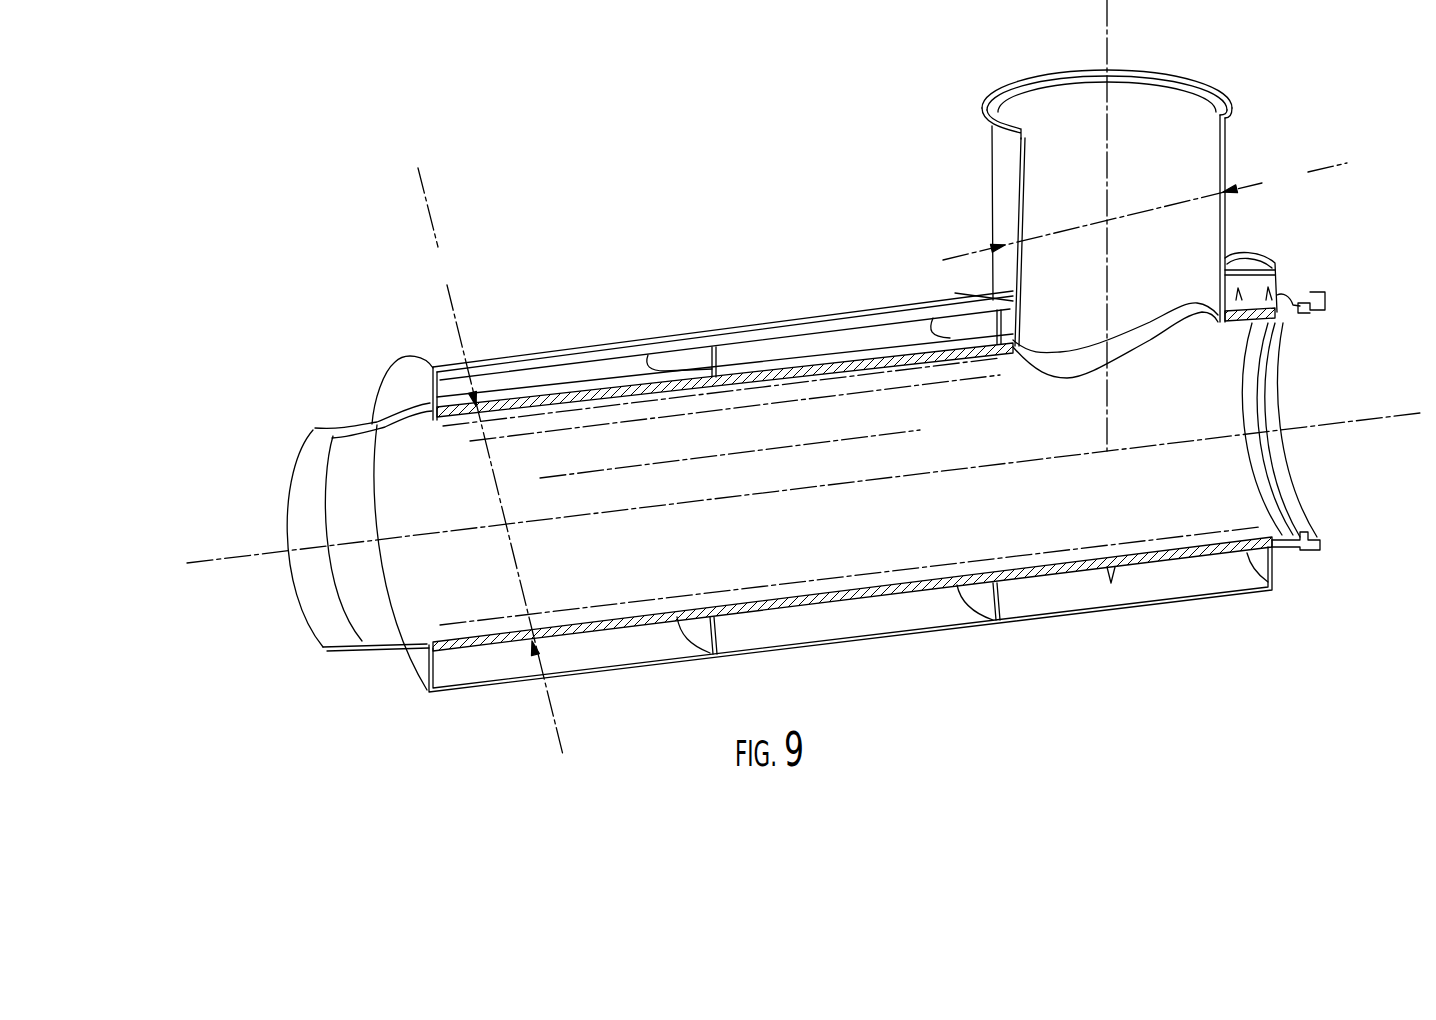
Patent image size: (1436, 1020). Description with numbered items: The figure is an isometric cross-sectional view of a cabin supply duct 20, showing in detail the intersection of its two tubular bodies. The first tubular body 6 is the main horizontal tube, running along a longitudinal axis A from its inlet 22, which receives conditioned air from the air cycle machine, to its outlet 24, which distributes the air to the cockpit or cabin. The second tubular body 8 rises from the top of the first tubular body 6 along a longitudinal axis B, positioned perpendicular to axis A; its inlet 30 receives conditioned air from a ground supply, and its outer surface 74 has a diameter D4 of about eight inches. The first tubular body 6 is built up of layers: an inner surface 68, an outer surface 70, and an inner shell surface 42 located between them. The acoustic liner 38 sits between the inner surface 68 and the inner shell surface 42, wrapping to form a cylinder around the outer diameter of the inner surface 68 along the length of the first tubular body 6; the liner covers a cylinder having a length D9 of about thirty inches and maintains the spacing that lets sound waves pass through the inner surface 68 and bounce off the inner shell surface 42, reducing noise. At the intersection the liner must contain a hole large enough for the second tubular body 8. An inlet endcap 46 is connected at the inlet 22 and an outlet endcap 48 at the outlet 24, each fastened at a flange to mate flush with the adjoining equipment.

The cabin supply duct 20 is at (240, 155).
The inlet 22 is at (1227, 490).
The outlet 24 is at (323, 508).
The outlet endcap 48 is at (370, 365).
The inner shell surface 42 is at (560, 392).
The acoustic liner 38 is at (820, 365).
The second tubular body 8 is at (1106, 177).
The outer surface 74 is at (1003, 163).
The inlet 30 is at (1043, 107).
The inner surface 68 is at (1207, 383).
The inlet endcap 46 is at (1312, 565).
The first tubular body 6 is at (898, 648).
The outer surface 70 is at (1027, 617).
The longitudinal axis A is at (1392, 411).
The longitudinal axis B is at (1108, 37).
The diameter D4 is at (1145, 211).
The length D9 is at (490, 461).